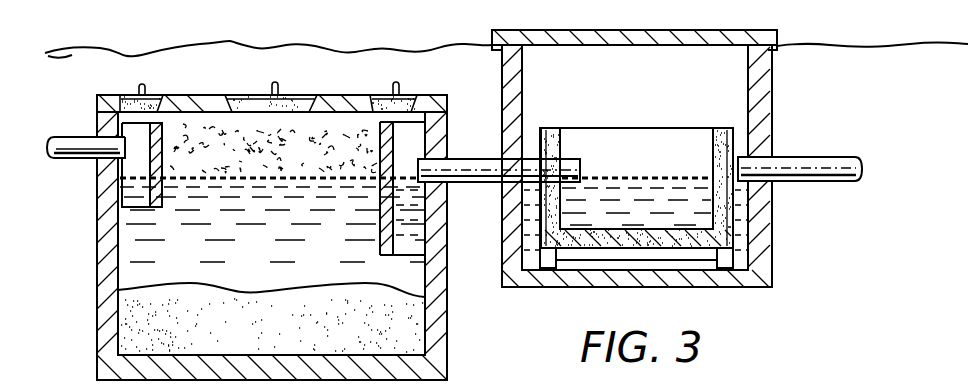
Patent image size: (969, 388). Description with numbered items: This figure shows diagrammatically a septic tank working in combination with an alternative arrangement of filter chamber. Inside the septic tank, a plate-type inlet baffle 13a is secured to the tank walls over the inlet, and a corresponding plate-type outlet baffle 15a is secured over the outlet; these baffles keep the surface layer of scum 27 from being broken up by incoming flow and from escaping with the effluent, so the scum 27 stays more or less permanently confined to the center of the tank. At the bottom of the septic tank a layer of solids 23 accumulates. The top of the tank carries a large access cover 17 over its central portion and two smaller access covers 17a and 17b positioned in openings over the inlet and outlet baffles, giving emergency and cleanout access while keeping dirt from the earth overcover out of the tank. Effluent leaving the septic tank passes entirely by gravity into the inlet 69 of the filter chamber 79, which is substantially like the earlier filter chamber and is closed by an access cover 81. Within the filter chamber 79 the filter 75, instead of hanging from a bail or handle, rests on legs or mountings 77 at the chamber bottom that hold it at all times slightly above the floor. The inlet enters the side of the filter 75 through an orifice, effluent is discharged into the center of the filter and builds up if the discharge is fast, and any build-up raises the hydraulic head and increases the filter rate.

The inlet baffle plate 13a is at (133, 162).
The access cover 17a is at (149, 93).
The access cover 17 is at (253, 94).
The access cover 17b is at (408, 92).
The surface layer of scum 27 is at (323, 137).
The outlet baffle plate 15a is at (407, 147).
The layer of solids 23 is at (312, 335).
The access cover 81 is at (698, 30).
The filter chamber 79 is at (772, 216).
The filter 75 is at (627, 128).
The inlet of the filter chamber 69 is at (562, 148).
The legs or mountings 77 is at (588, 262).